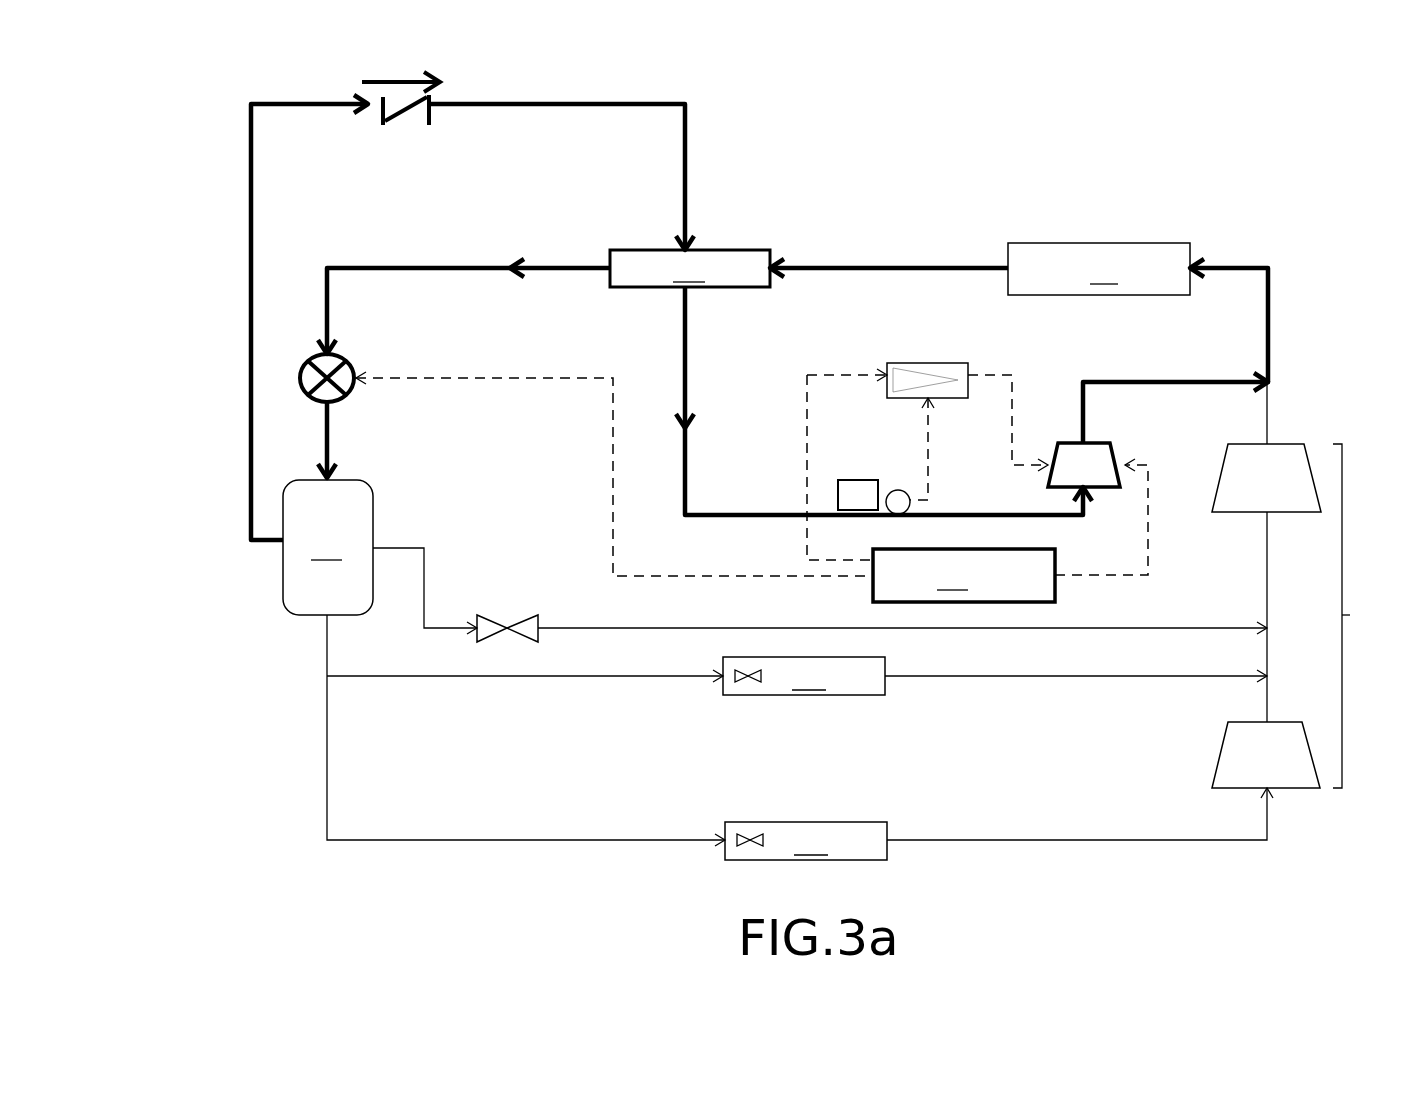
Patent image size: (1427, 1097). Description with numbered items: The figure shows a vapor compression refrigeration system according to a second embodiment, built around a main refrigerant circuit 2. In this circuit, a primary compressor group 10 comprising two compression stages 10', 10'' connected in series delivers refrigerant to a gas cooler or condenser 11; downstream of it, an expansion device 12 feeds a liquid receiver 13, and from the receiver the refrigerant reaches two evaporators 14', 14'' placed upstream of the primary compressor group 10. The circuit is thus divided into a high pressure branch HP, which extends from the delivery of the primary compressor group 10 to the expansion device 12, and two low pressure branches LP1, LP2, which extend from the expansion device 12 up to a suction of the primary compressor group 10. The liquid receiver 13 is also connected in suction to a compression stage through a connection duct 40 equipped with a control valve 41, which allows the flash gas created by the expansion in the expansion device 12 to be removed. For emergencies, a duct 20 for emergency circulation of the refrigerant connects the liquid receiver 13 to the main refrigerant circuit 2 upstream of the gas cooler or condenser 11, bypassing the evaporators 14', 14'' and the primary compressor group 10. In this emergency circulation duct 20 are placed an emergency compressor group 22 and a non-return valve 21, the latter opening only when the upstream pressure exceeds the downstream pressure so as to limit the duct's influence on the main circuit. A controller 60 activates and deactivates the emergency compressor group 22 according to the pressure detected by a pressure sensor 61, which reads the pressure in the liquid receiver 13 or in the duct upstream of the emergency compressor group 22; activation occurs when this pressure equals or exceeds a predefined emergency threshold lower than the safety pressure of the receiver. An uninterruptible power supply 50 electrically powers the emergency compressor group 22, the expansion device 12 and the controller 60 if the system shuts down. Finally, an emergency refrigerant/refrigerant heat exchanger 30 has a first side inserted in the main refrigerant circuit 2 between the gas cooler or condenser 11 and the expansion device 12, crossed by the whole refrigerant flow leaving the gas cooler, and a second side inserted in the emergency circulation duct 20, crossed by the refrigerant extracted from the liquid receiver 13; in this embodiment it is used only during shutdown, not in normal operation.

The main refrigerant circuit 2 is at (445, 262).
The primary compressor group 10 is at (1363, 616).
The compression stage 10' is at (1266, 755).
The compression stage 10'' is at (1266, 478).
The gas cooler or condenser 11 is at (1099, 269).
The expansion device 12 is at (352, 364).
The liquid receiver 13 is at (328, 547).
The evaporator 14' is at (804, 676).
The evaporator 14'' is at (806, 841).
The emergency circulation duct 20 is at (690, 155).
The non-return valve 21 is at (375, 100).
The emergency compressor group 22 is at (1080, 443).
The emergency refrigerant/refrigerant heat exchanger 30 is at (690, 268).
The connection duct 40 is at (1190, 628).
The control valve 41 is at (507, 615).
The uninterruptible power supply 50 is at (752, 485).
The controller 60 is at (932, 363).
The pressure sensor 61 is at (895, 490).
The high pressure branch HP is at (952, 235).
The low pressure branch LP1 is at (608, 690).
The low pressure branch LP2 is at (572, 860).